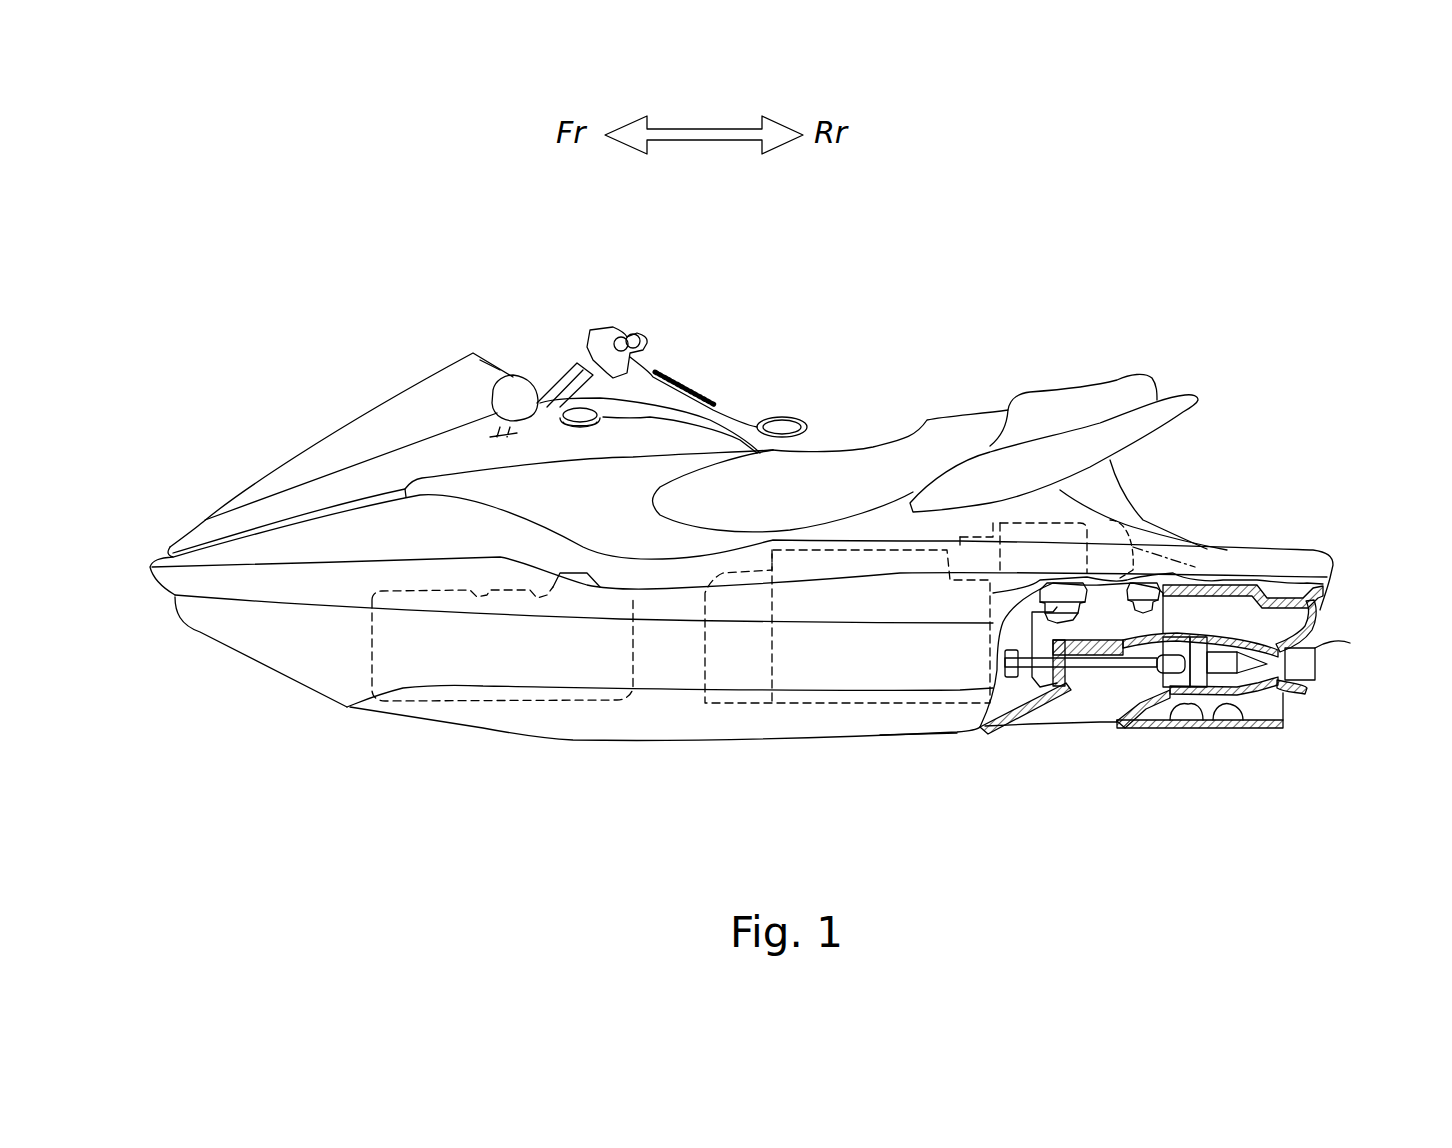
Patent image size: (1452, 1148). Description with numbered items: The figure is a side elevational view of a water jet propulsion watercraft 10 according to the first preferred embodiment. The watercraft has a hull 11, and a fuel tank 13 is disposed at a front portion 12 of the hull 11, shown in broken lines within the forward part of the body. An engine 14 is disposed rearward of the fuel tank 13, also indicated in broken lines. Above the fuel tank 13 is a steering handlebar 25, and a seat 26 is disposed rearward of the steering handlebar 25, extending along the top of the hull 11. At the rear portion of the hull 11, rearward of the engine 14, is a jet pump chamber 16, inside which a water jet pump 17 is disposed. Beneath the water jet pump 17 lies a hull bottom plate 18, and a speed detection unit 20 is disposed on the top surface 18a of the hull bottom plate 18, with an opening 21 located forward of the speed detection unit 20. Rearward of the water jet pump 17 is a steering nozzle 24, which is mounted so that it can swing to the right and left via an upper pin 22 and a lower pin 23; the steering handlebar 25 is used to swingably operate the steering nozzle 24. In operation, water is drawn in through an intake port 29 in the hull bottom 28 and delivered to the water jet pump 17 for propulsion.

The water jet propulsion watercraft 10 is at (435, 215).
The hull 11 is at (397, 410).
The front portion 12 is at (343, 530).
The fuel tank 13 is at (488, 675).
The engine 14 is at (818, 677).
The jet pump chamber 16 is at (1187, 727).
The water jet pump 17 is at (1240, 653).
The hull bottom plate 18 is at (1253, 728).
The top surface 18a is at (1237, 725).
The speed detection unit 20 is at (1190, 710).
The opening 21 is at (1150, 728).
The upper pin 22 is at (1317, 603).
The lower pin 23 is at (1315, 675).
The steering nozzle 24 is at (1317, 627).
The steering handlebar 25 is at (647, 330).
The seat 26 is at (878, 460).
The hull bottom 28 is at (960, 735).
The intake port 29 is at (1020, 713).